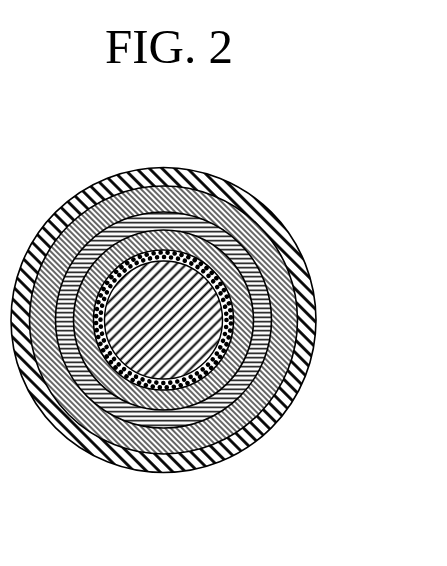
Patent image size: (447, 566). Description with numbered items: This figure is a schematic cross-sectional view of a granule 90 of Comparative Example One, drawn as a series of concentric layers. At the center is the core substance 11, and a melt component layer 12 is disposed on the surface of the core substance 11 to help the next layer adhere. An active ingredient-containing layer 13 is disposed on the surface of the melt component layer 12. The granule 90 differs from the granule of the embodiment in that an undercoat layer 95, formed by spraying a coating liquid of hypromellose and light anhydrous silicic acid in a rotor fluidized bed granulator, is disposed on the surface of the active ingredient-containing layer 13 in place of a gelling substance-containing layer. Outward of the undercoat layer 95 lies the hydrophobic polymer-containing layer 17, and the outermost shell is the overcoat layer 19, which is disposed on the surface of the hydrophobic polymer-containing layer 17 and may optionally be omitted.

The granule 90 is at (205, 353).
The hydrophobic polymer-containing layer 17 is at (268, 205).
The active ingredient-containing layer 13 is at (293, 252).
The melt component layer 12 is at (317, 303).
The core substance 11 is at (313, 343).
The undercoat layer 95 is at (310, 370).
The overcoat layer 19 is at (287, 413).